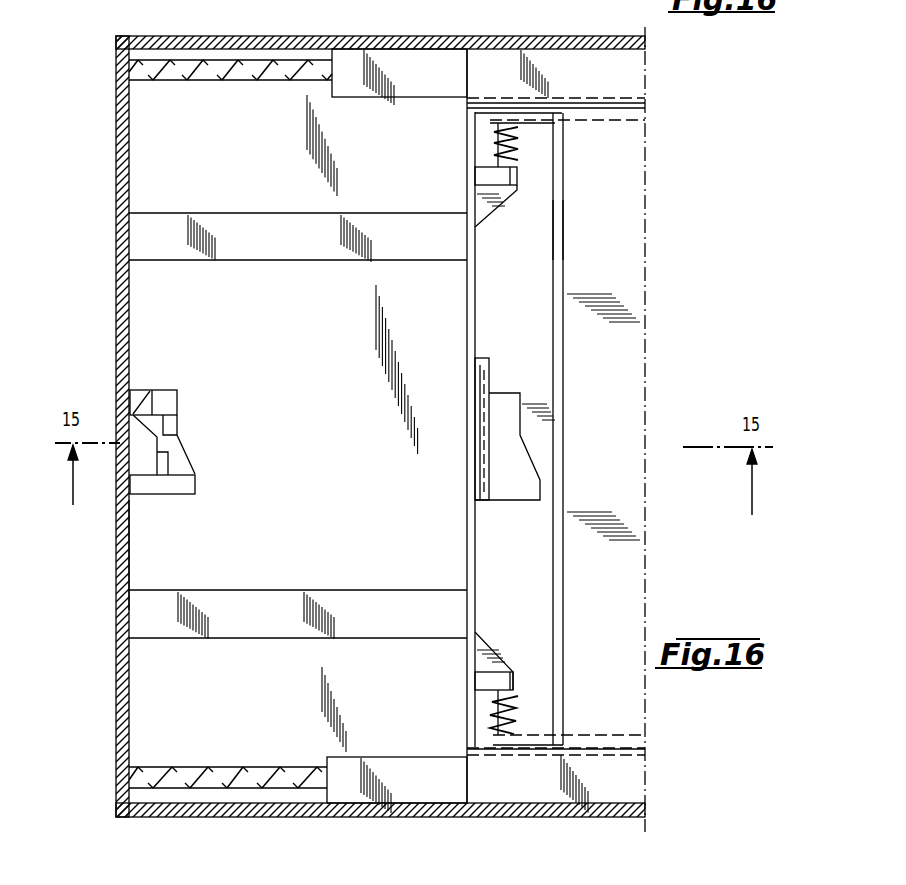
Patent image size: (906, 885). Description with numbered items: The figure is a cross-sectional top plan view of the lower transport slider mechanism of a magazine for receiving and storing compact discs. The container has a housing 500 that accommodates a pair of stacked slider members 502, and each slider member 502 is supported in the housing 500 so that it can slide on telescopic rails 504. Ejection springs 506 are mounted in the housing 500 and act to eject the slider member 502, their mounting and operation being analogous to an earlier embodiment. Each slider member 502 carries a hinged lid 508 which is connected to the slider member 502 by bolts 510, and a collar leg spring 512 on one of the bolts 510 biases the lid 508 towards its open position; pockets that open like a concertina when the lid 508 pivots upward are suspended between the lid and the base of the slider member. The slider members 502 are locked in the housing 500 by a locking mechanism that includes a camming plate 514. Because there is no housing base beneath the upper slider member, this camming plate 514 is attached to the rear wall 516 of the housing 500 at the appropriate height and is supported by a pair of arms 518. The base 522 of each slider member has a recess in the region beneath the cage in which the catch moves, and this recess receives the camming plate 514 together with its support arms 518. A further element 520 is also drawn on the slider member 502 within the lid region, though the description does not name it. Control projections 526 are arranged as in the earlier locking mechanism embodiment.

The housing 500 is at (124, 186).
The slider member 502 is at (466, 164).
The telescopic rails 504 is at (415, 60).
The ejection springs 506 is at (205, 66).
The hinged lid 508 is at (622, 195).
The bolts 510 is at (507, 161).
The collar leg spring 512 is at (478, 156).
The camming plate 514 is at (172, 445).
The rear wall 516 is at (130, 556).
The arms 518 is at (165, 398).
The detent block 520 is at (488, 372).
The base 522 is at (524, 243).
The control projections 526 is at (138, 390).